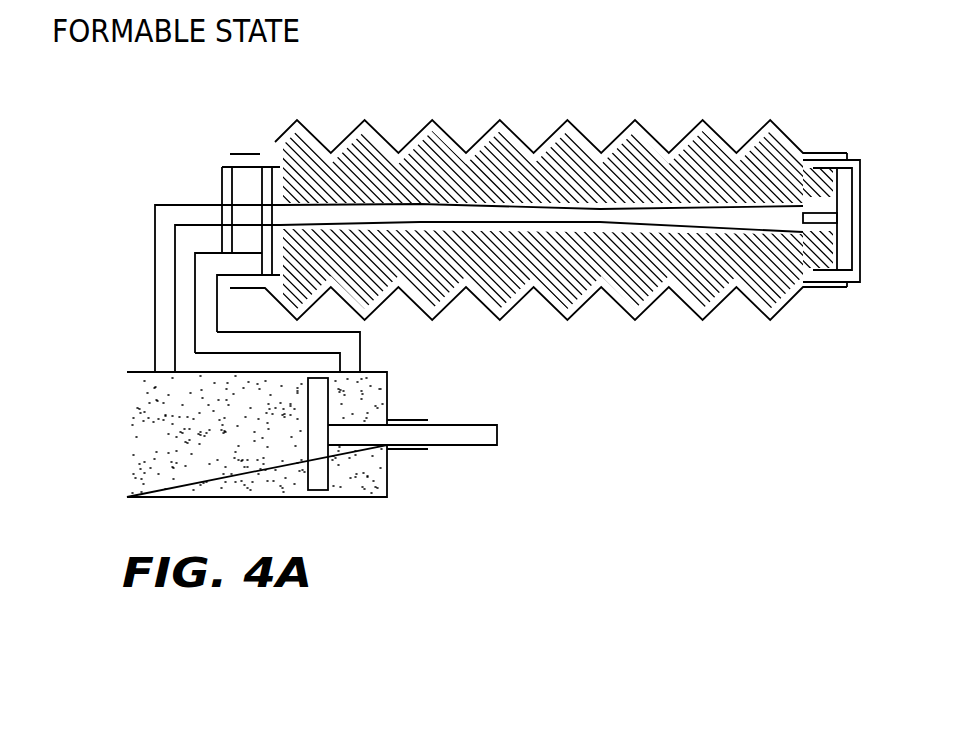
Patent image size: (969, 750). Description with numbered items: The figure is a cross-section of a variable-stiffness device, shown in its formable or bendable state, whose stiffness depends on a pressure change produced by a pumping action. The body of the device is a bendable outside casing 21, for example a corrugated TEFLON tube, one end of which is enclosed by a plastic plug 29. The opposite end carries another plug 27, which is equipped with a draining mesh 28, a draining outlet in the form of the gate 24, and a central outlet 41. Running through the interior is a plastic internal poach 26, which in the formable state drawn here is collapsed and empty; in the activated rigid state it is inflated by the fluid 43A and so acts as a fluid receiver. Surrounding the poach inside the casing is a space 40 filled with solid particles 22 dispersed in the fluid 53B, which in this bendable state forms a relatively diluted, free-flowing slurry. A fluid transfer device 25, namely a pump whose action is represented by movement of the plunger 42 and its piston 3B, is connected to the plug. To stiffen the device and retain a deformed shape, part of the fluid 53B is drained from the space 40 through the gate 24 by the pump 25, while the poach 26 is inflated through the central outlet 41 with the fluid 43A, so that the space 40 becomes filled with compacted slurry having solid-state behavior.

The bendable outside casing 21 is at (772, 322).
The solid particles 22 is at (633, 150).
The gate 24 is at (362, 338).
The fluid transfer device 25 is at (380, 497).
The plastic internal poach 26 is at (617, 210).
The plug 27 is at (222, 157).
The draining mesh 28 is at (268, 170).
The plastic plug 29 is at (860, 243).
The piston 3B is at (375, 397).
The space 40 is at (632, 287).
The central outlet 41 is at (153, 220).
The plunger 42 is at (472, 447).
The fluid 43A is at (165, 443).
The fluid 53B is at (707, 150).